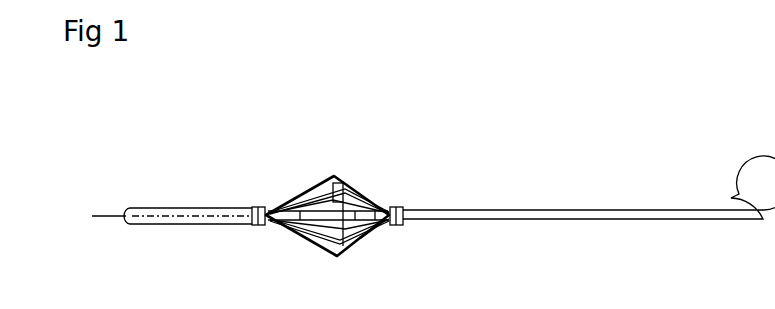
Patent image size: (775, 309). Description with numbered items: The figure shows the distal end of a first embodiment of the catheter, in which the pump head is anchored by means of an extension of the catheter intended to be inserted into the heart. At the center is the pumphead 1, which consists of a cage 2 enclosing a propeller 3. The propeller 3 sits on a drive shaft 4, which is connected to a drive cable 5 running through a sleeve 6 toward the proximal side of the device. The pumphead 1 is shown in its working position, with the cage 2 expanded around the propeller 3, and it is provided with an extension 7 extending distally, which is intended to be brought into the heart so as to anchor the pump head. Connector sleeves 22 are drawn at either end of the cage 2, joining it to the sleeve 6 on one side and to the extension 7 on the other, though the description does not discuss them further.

The pumphead 1 is at (325, 165).
The cage 2 is at (364, 243).
The propeller 3 is at (337, 197).
The drive shaft 4 is at (316, 216).
The drive cable 5 is at (113, 212).
The sleeve 6 is at (203, 206).
The extension 7 is at (540, 207).
The connector sleeve 22 is at (264, 207).